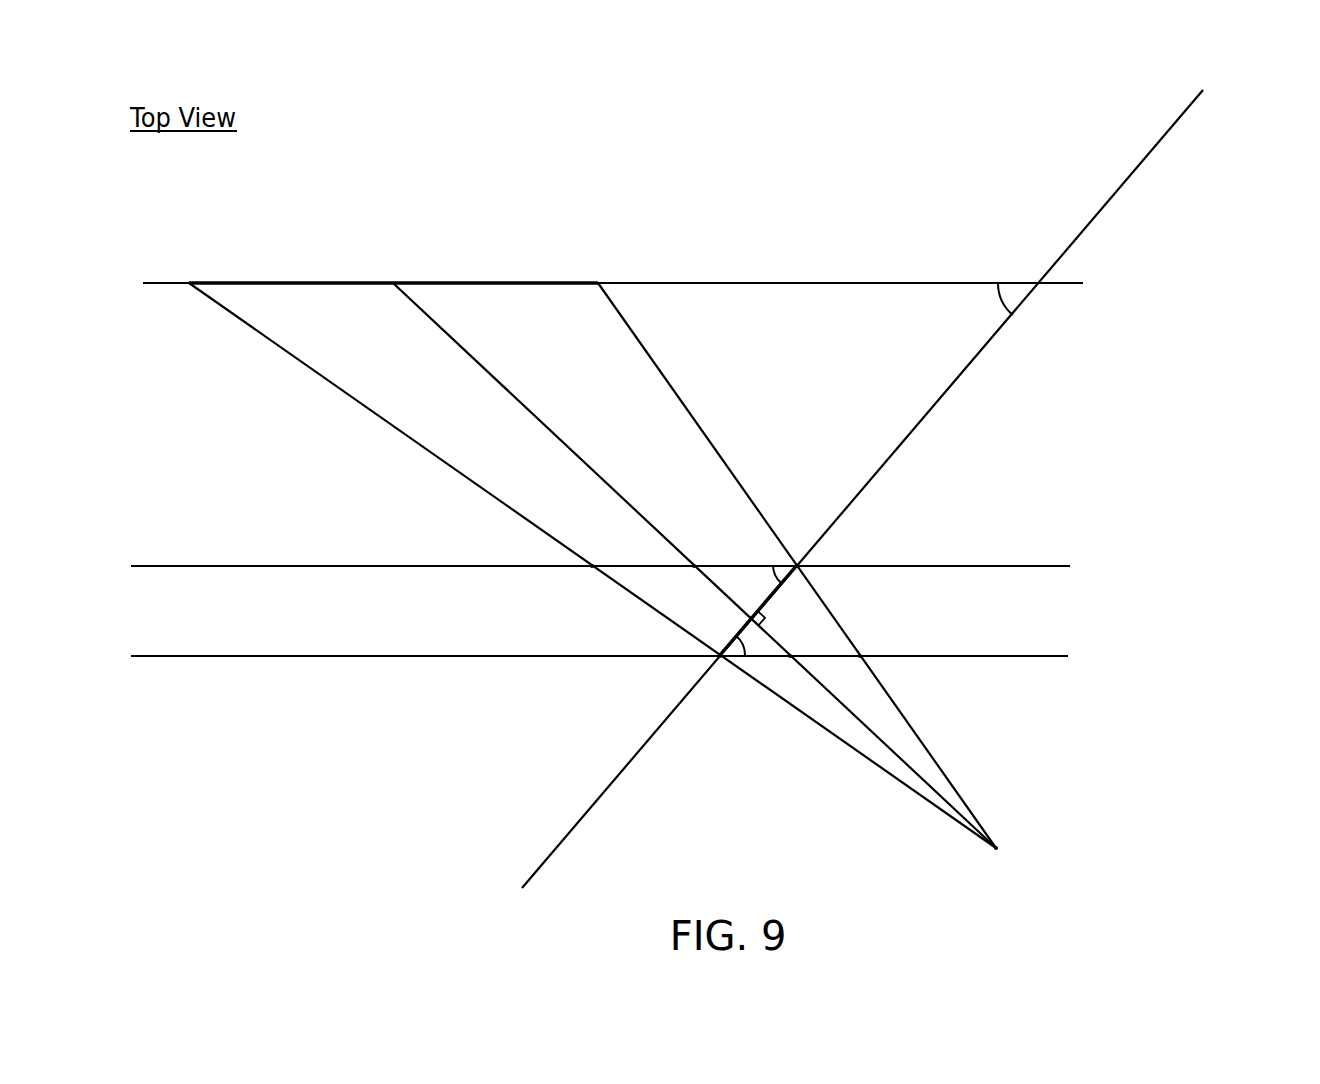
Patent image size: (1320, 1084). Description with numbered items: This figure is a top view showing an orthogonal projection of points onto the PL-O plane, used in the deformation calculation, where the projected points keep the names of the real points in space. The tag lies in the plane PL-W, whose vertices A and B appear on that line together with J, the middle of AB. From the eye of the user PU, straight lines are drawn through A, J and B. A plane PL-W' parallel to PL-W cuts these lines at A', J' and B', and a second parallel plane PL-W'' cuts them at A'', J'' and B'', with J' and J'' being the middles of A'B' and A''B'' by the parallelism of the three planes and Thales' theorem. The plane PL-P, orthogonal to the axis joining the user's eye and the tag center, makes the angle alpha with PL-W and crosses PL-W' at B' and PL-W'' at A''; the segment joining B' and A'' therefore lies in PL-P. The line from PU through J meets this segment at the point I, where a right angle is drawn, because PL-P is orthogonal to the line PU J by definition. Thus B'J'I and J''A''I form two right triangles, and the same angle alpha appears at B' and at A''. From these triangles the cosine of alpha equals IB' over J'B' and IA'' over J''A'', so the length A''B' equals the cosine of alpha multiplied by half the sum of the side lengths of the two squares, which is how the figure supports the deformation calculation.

The vertex A of the tag A is at (584, 544).
The middle point J of AB J is at (693, 544).
The vertex B of the tag B is at (790, 544).
The point A' is at (605, 550).
The middle point J' of A'B' J' is at (703, 550).
The point B' is at (836, 550).
The point A'' is at (728, 675).
The middle point J'' of A''B'' J'' is at (791, 675).
The point B'' is at (888, 675).
The intersection point I is at (758, 610).
The eye of the user PU is at (1011, 864).
The PL-P plane PL-P is at (893, 470).
The PL-W plane PL-W is at (656, 283).
The PL-W' plane PL-W' is at (642, 565).
The PL-W'' plane PL-W'' is at (651, 655).